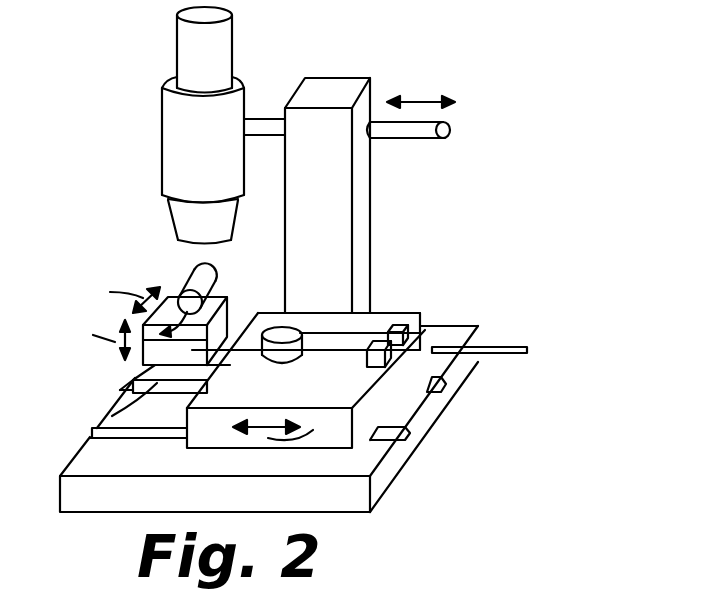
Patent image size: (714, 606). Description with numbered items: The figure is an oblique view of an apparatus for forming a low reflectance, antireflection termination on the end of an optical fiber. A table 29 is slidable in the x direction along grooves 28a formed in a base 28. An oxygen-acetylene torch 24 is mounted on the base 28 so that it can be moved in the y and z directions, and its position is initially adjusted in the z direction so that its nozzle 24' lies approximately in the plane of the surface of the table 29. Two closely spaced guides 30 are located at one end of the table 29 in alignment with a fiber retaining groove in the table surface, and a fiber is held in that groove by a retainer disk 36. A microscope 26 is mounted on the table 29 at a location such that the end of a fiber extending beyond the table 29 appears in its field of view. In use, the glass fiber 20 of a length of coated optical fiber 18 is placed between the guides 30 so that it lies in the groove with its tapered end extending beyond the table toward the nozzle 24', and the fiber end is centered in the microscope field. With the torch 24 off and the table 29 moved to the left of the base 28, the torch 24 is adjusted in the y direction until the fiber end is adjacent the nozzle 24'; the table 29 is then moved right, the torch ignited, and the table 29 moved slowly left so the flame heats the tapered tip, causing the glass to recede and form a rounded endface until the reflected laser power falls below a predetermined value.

The coated optical fiber 18 is at (507, 338).
The glass fiber 20 is at (325, 352).
The oxygen-acetylene torch 24 is at (168, 284).
The nozzle 24' is at (146, 337).
The microscope 26 is at (162, 128).
The base 28 is at (72, 457).
The grooves 28a is at (118, 428).
The table 29 is at (383, 322).
The guides 30 is at (392, 352).
The retainer disk 36 is at (278, 364).